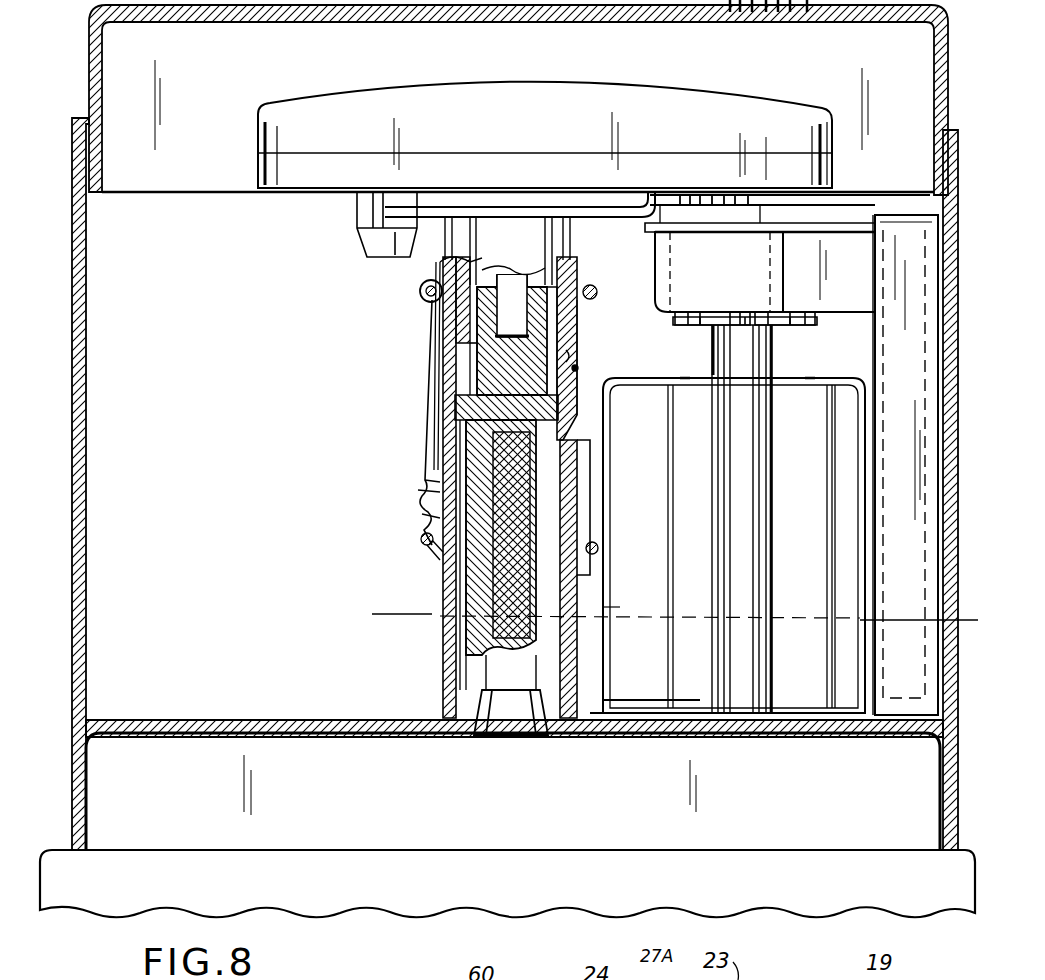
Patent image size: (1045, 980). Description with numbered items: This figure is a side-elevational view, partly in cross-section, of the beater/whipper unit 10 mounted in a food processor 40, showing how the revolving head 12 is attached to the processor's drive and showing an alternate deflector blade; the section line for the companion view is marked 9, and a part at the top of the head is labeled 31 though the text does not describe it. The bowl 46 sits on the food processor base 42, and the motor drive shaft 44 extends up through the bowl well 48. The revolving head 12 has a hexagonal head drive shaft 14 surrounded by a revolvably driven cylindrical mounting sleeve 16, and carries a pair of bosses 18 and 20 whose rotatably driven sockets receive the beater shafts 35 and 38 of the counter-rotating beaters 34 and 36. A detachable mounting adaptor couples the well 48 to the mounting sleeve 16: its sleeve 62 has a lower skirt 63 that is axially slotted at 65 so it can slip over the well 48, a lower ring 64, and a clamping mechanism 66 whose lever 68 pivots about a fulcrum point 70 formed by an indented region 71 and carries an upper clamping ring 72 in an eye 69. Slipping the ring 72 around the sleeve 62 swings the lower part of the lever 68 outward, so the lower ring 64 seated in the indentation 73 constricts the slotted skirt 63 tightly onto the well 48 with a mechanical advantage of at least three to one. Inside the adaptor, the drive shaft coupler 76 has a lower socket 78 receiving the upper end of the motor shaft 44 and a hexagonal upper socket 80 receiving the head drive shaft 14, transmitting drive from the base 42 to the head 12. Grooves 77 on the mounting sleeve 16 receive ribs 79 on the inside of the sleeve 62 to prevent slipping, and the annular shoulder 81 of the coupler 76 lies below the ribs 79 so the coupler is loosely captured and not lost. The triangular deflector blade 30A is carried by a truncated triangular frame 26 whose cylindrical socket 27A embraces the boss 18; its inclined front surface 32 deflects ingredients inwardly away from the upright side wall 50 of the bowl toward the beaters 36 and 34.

The beater/whipper unit 10 is at (226, 235).
The revolving head 12 is at (350, 100).
The head drive shaft 14 is at (510, 288).
The cylindrical mounting sleeve 16 is at (566, 279).
The boss 18 is at (712, 312).
The boss 20 is at (790, 312).
The truncated triangular frame 26 is at (845, 258).
The cylindrical socket 27A is at (756, 277).
The triangular-shaped deflector blade 30A is at (870, 353).
The knob stem 31 is at (880, 14).
The inclined front surface 32 is at (905, 415).
The beater 34 is at (610, 460).
The beater shaft 35 is at (712, 500).
The beater 36 is at (860, 445).
The beater shaft 38 is at (774, 515).
The food processor 40 is at (291, 690).
The food processor base 42 is at (188, 750).
The motor drive shaft 44 is at (500, 620).
The bowl 46 is at (962, 492).
The bowl well 48 is at (448, 664).
The upright side wall 50 is at (950, 350).
The sleeve 62 is at (445, 318).
The lower slotted skirt 63 is at (600, 550).
The lower ring 64 is at (420, 537).
The slots 65 is at (596, 500).
The clamping mechanism 66 is at (428, 408).
The lever 68 is at (436, 366).
The eye 69 is at (419, 294).
The fulcrum point 70 is at (425, 480).
The indented region 71 is at (418, 490).
The upper clamping ring 72 is at (598, 293).
The indentation 73 is at (425, 515).
The drive shaft coupler 76 is at (494, 373).
The axially extending grooves 77 is at (565, 320).
The lower socket 78 is at (505, 416).
The axially extending ribs 79 is at (580, 354).
The hexagonal upper socket 80 is at (470, 352).
The annular shoulder 81 is at (578, 368).
The section line 9- 9 is at (968, 592).